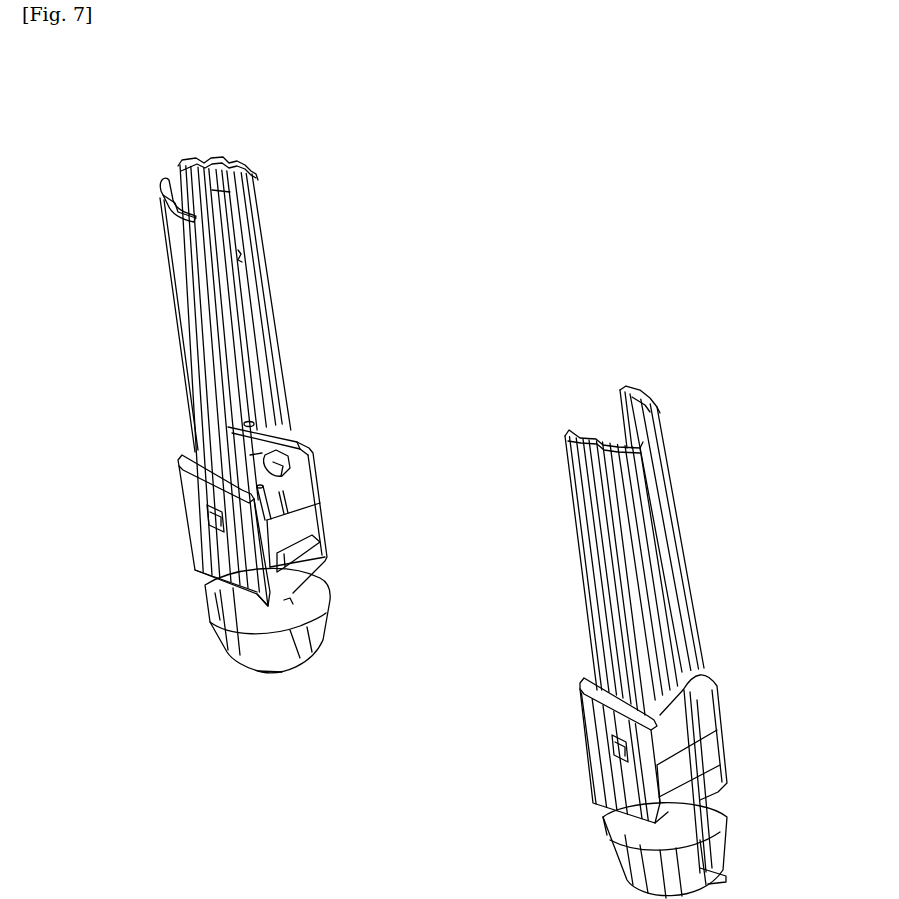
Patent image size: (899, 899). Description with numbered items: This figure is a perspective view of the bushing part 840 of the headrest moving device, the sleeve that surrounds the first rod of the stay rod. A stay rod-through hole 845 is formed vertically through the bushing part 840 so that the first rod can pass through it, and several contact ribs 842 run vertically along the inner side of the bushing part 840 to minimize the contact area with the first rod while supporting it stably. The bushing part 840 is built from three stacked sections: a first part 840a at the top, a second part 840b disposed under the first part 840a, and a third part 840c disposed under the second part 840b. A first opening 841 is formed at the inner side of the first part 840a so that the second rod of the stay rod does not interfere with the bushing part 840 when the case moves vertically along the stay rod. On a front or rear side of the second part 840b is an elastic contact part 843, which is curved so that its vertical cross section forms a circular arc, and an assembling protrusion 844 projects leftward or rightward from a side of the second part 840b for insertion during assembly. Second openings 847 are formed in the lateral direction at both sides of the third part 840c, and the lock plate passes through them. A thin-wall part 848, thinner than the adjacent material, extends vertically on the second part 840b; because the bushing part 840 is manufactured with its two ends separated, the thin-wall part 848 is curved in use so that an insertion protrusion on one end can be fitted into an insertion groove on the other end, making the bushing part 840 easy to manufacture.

The bushing part 840 is at (196, 150).
The first part 840a is at (184, 292).
The second part 840b is at (184, 497).
The third part 840c is at (212, 630).
The first opening 841 is at (241, 254).
The contact ribs 842 is at (217, 192).
The elastic contact part 843 is at (277, 474).
The assembling protrusion 844 is at (313, 553).
The stay rod-through hole 845 is at (258, 455).
The second openings 847 is at (287, 603).
The thin-wall part 848 is at (692, 770).